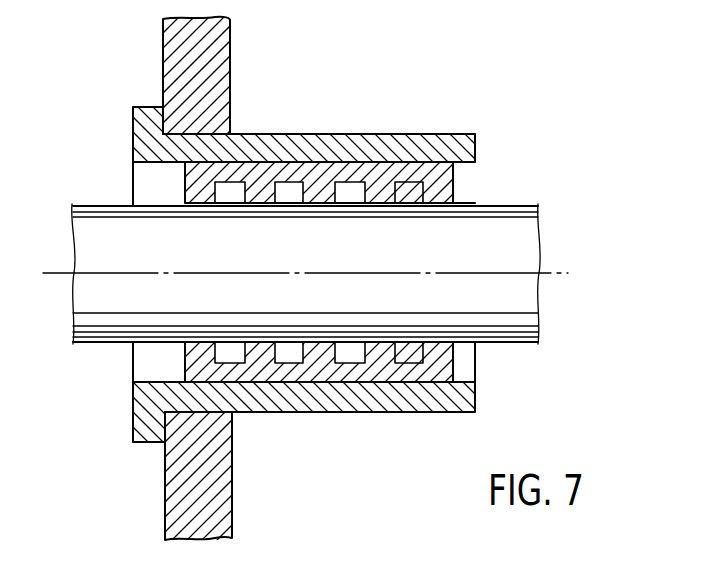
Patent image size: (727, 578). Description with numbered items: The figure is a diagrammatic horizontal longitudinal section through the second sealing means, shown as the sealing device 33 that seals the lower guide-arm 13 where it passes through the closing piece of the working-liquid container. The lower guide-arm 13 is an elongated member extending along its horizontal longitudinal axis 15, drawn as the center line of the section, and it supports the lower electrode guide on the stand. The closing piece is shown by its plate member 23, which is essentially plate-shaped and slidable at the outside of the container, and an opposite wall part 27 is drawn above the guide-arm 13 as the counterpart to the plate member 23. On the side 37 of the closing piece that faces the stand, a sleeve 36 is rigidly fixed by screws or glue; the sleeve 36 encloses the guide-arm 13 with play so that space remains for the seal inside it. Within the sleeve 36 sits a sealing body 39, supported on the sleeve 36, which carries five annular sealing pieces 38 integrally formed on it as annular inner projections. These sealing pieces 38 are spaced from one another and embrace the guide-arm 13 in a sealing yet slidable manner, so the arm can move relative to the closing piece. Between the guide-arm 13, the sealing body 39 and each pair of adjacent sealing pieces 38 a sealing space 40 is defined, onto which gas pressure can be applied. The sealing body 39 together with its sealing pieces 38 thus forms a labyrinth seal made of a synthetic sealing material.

The lower guide-arm 13 is at (495, 225).
The horizontal longitudinal axis 15 is at (556, 268).
The plate member 23 is at (236, 498).
The upper support wall 27 is at (232, 65).
The sealing device 33 is at (178, 353).
The sleeve 36 is at (148, 136).
The side of the closing piece 37 is at (165, 480).
The annular sealing pieces 38 is at (430, 342).
The sealing body 39 is at (447, 372).
The sealing space 40 is at (350, 193).